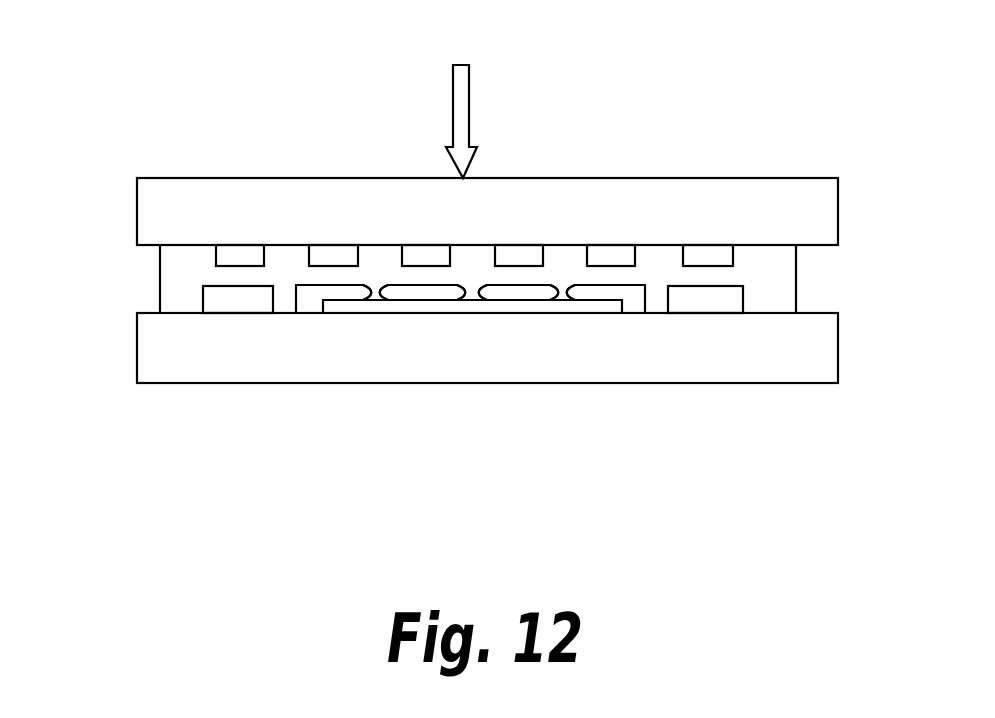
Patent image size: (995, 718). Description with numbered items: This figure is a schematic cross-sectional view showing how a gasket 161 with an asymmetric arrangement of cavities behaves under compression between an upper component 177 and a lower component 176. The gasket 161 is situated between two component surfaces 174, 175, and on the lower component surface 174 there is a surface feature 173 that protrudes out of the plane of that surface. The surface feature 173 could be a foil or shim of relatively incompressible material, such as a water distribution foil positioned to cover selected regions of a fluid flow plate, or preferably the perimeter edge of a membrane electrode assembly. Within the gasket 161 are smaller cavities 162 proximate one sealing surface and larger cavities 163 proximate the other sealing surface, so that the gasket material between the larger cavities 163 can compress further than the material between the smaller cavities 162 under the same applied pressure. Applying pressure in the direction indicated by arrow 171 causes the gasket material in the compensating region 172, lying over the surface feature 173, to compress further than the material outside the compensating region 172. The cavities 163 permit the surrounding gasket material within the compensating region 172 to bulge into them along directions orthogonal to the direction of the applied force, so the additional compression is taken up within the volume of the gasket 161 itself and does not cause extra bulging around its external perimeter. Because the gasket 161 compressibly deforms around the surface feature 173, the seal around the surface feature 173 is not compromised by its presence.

The gasket 161 is at (158, 282).
The cavities 162 is at (612, 255).
The cavities 163 is at (523, 285).
The arrow 171 is at (460, 105).
The compensating region 172 is at (472, 285).
The surface feature 173 is at (336, 303).
The lower component surface 174 is at (145, 310).
The upper component surface 175 is at (823, 245).
The lower component 176 is at (612, 360).
The upper component 177 is at (415, 220).